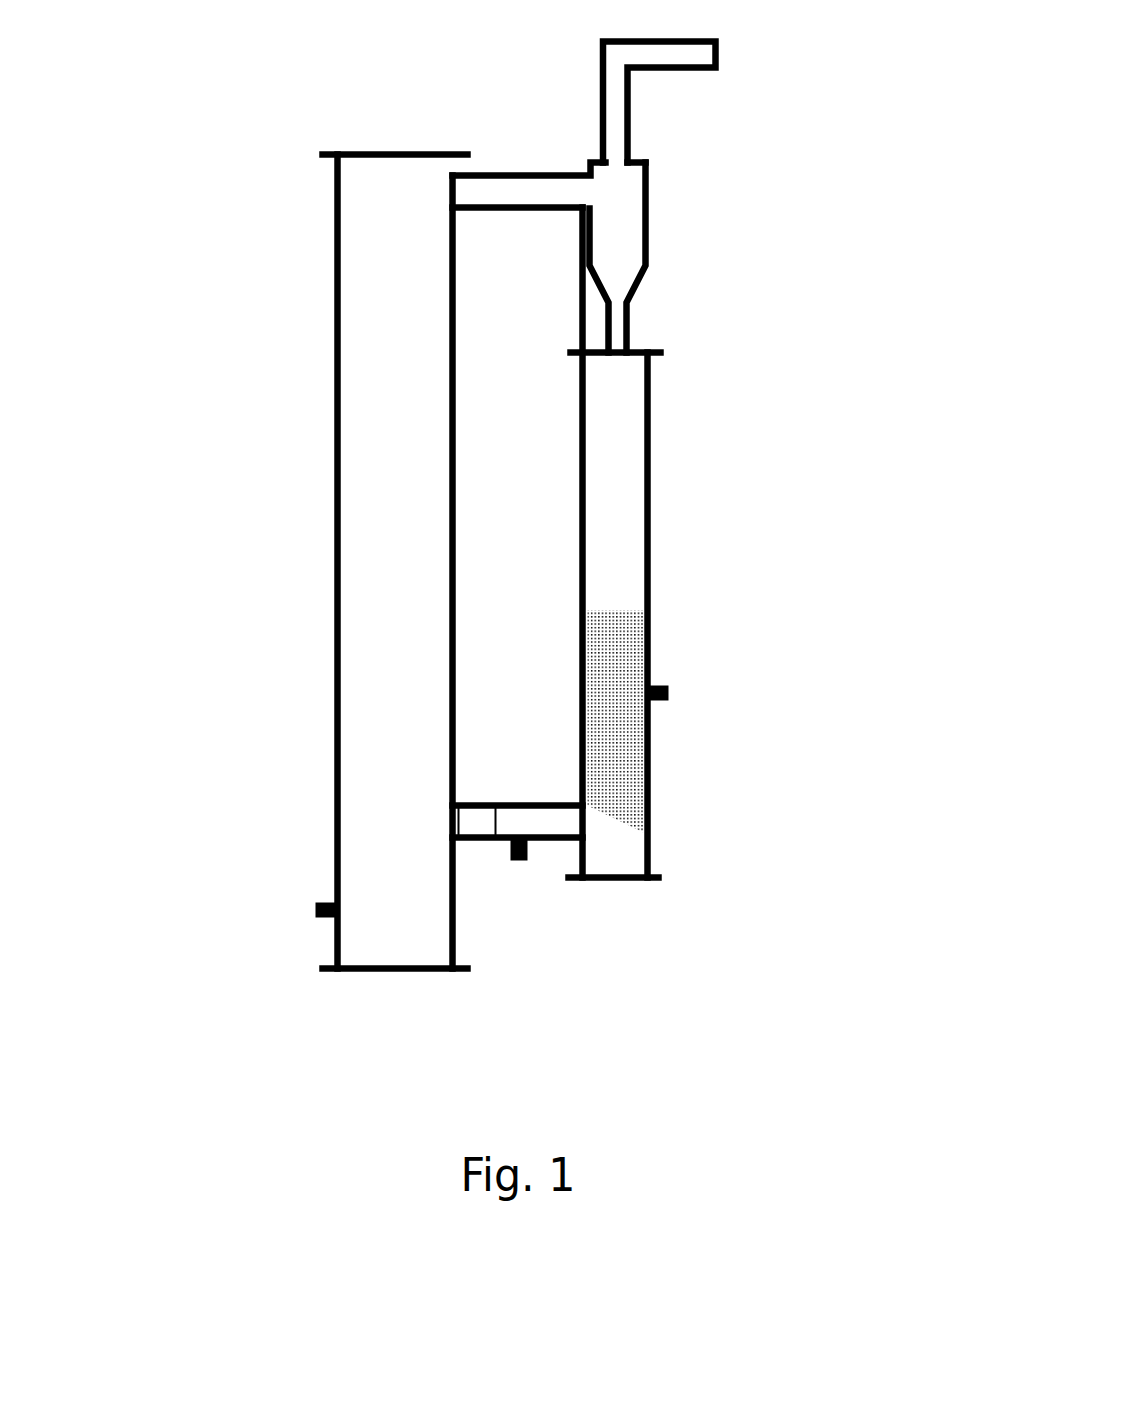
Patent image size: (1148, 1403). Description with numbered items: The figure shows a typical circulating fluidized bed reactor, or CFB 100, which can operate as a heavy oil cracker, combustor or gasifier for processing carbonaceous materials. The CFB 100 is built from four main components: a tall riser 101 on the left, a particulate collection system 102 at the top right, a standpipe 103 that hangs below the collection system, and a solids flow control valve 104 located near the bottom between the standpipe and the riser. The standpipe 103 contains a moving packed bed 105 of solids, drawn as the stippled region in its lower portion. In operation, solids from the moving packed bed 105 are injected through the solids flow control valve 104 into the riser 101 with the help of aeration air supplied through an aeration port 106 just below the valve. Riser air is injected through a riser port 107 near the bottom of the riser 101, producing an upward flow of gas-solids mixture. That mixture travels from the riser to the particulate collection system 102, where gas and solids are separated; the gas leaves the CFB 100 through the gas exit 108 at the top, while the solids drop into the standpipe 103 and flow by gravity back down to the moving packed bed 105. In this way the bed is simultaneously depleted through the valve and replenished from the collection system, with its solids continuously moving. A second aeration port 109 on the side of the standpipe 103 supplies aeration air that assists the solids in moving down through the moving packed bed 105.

The CFB 100 is at (235, 291).
The riser 101 is at (360, 752).
The particulate collection system 102 is at (620, 234).
The standpipe 103 is at (613, 517).
The solids flow control valve 104 is at (478, 817).
The moving packed bed 105 is at (622, 668).
The aeration port 106 is at (523, 860).
The riser port 107 is at (312, 912).
The gas exit 108 is at (715, 70).
The aeration port 109 is at (667, 702).